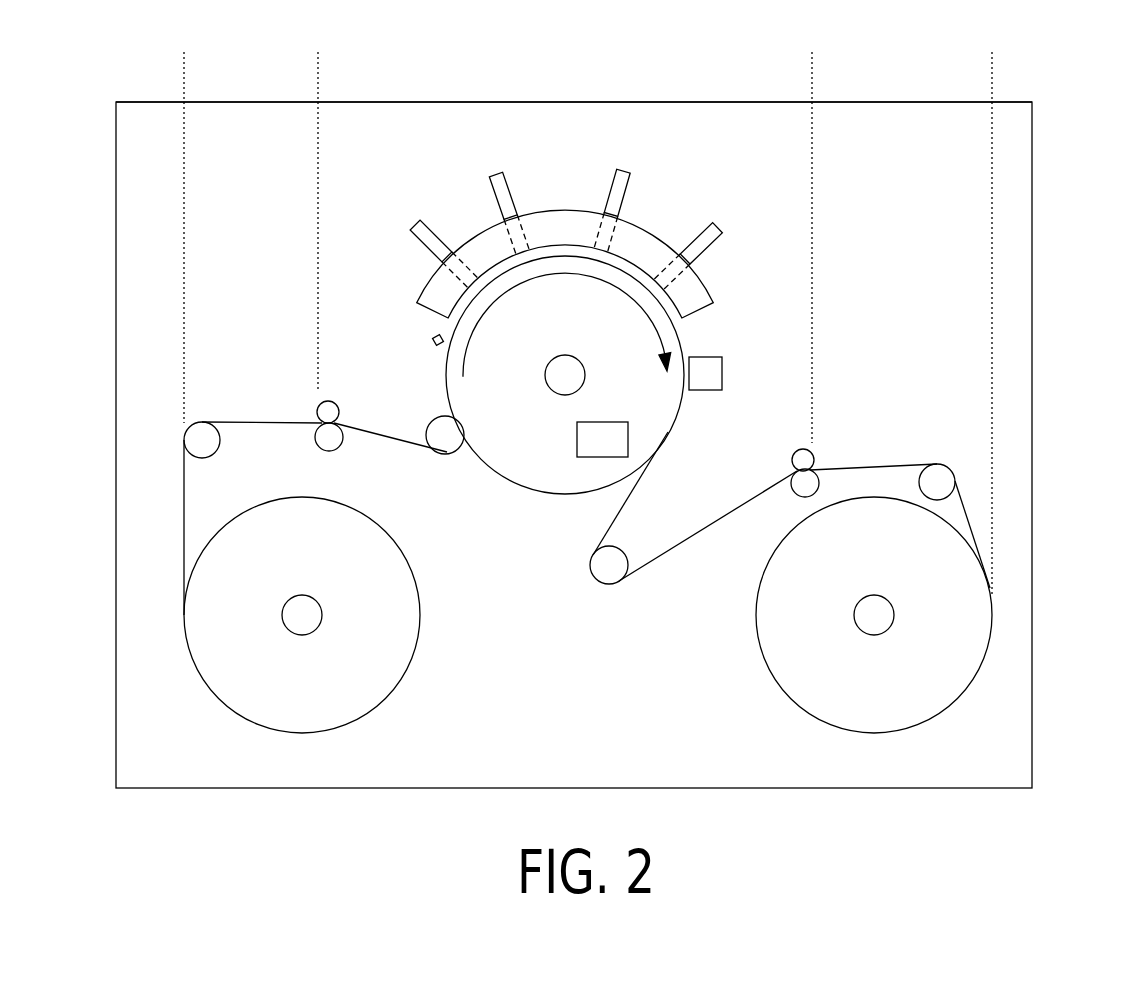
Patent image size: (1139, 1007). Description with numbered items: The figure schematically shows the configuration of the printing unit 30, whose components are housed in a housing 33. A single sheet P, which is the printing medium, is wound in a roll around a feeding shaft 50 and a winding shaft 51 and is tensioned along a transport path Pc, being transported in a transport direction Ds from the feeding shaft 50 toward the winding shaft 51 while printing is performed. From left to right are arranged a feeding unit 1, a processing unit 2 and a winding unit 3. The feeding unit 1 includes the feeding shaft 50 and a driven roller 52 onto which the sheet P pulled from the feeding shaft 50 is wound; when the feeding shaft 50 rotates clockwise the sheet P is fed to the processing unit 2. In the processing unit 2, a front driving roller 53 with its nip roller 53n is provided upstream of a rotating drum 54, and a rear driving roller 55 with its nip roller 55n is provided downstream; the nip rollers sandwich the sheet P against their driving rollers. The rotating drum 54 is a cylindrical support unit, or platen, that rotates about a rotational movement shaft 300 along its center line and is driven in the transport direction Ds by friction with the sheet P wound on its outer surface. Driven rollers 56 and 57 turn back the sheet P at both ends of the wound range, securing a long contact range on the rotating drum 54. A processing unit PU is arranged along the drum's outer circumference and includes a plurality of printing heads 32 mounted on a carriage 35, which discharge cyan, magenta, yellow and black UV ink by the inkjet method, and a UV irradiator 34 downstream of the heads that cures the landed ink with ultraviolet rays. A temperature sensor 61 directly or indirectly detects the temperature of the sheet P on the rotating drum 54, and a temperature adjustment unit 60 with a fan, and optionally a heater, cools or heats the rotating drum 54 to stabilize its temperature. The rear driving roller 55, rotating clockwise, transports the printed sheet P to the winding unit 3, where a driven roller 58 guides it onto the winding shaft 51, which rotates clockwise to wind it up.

The printing unit 30 is at (146, 74).
The housing 33 is at (1013, 100).
The feeding unit 1 is at (318, 50).
The processing unit 2 is at (318, 50).
The winding unit 3 is at (812, 50).
The processing unit PU is at (620, 114).
The rotating drum 54 is at (543, 468).
The rotational movement shaft 300 is at (562, 364).
The transport direction Ds is at (567, 325).
The carriage 35 is at (694, 294).
The printing head 32 is at (418, 226).
The temperature sensor 61 is at (430, 336).
The UV irradiator 34 is at (703, 391).
The temperature adjustment unit 60 is at (598, 458).
The sheet P is at (184, 482).
The transport path Pc is at (658, 572).
The feeding shaft 50 is at (292, 628).
The winding shaft 51 is at (880, 626).
The driven roller 52 is at (207, 443).
The nip roller 53n is at (333, 408).
The front driving roller 53 is at (333, 443).
The driven roller 56 is at (449, 440).
The driven roller 57 is at (607, 572).
The nip roller 55n is at (799, 461).
The rear driving roller 55 is at (802, 486).
The driven roller 58 is at (938, 478).